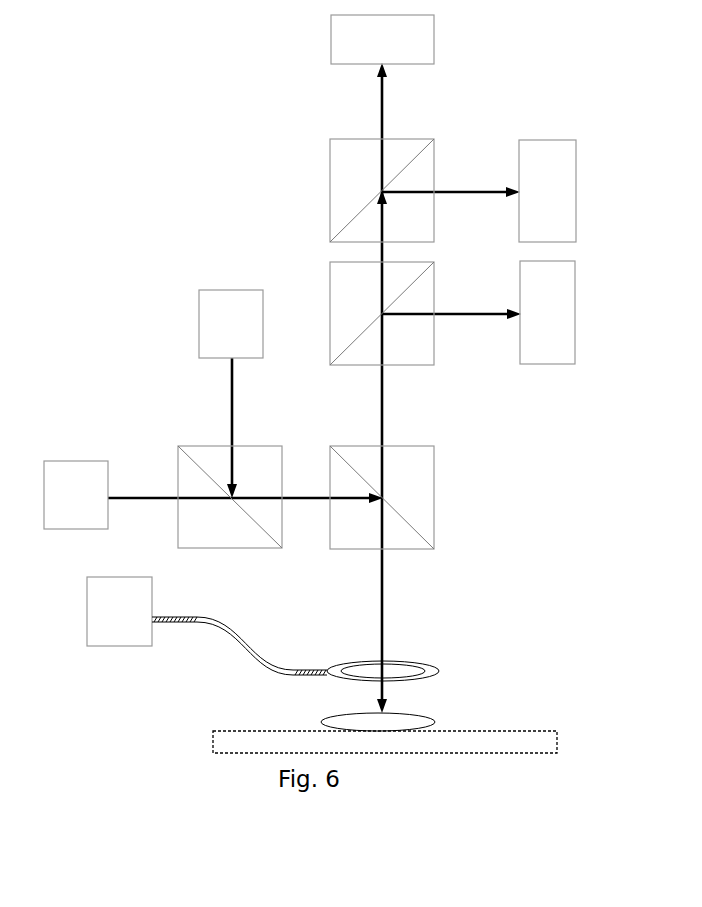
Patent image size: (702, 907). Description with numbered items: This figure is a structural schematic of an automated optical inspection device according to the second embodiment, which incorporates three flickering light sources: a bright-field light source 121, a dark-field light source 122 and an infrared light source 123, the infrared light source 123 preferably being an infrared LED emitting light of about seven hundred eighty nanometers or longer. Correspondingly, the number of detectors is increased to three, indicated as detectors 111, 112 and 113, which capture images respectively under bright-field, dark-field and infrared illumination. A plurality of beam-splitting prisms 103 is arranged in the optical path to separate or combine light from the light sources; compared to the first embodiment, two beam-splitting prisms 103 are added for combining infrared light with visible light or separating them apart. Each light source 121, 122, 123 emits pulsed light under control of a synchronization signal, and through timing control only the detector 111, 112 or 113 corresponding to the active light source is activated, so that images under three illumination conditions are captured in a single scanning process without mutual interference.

The beam-splitting prism 103 is at (306, 344).
The detector 111 is at (382, 39).
The detector 112 is at (547, 191).
The detector 113 is at (547, 312).
The first light source 121 is at (76, 495).
The second light source 122 is at (207, 626).
The infrared light source 123 is at (231, 324).